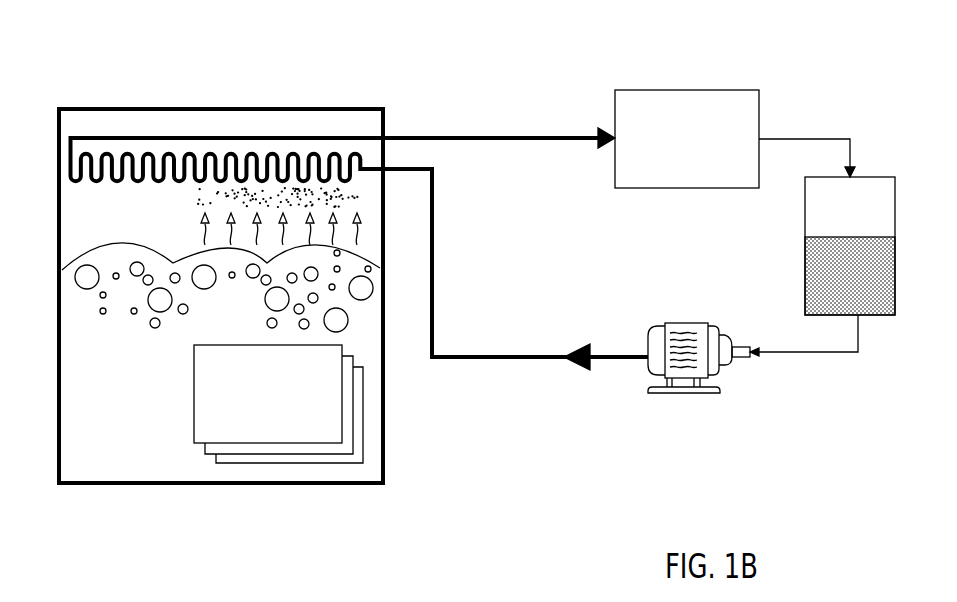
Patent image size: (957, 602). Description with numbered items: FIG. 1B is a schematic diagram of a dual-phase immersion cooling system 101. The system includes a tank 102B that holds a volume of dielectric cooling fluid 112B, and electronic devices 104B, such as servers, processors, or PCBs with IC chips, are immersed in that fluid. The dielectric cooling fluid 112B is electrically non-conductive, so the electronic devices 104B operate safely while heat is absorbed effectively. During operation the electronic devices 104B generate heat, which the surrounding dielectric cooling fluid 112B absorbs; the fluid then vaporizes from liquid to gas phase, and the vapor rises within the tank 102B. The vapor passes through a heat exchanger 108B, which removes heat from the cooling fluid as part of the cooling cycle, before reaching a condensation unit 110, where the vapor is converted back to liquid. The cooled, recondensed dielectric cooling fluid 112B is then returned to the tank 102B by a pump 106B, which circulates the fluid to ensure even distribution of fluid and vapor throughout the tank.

The dual-phase immersion cooling system 101 is at (110, 38).
The tank 102B is at (235, 107).
The electronic devices 104B is at (246, 432).
The pump 106B is at (684, 379).
The heat exchanger 108B is at (664, 178).
The condensation unit 110 is at (804, 257).
The dielectric cooling fluid 112B is at (177, 460).